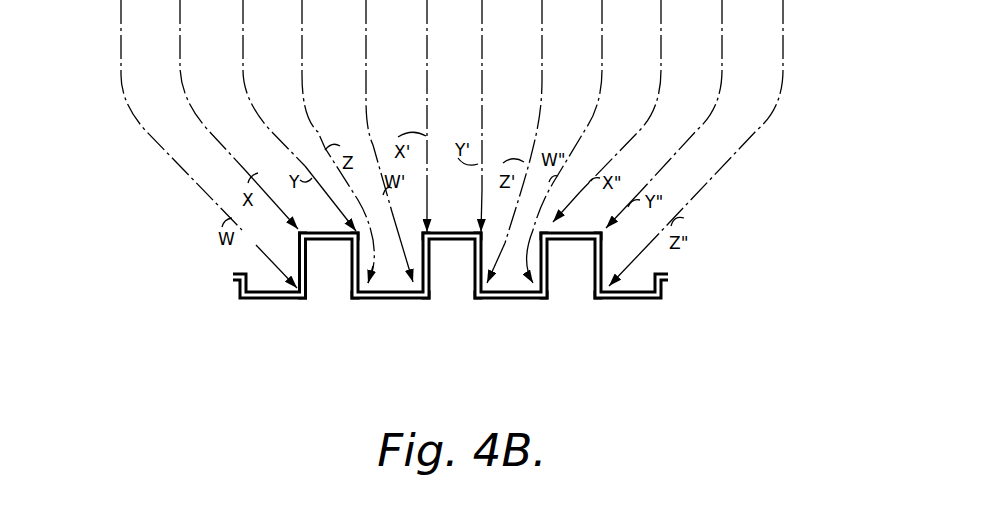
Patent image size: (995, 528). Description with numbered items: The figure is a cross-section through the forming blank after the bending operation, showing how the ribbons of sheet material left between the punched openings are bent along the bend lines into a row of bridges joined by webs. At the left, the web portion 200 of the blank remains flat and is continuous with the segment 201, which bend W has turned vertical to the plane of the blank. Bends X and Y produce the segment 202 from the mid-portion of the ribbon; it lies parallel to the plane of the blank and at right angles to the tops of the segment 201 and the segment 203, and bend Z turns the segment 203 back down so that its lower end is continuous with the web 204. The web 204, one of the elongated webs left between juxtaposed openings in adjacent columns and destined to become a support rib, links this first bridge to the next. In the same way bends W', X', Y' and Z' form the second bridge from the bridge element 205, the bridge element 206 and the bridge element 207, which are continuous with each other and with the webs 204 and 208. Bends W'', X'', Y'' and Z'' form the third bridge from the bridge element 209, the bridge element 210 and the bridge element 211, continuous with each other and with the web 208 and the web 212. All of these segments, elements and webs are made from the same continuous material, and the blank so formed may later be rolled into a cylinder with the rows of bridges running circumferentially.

The web portion 200 is at (252, 300).
The segment 201 is at (305, 298).
The segment 202 is at (333, 242).
The segment 203 is at (354, 276).
The web 204 is at (397, 299).
The bridge element 205 is at (430, 250).
The bridge element 206 is at (469, 242).
The bridge element 207 is at (482, 266).
The web 208 is at (526, 299).
The bridge element 209 is at (549, 262).
The bridge element 210 is at (589, 242).
The bridge element 211 is at (602, 272).
The web 212 is at (648, 299).